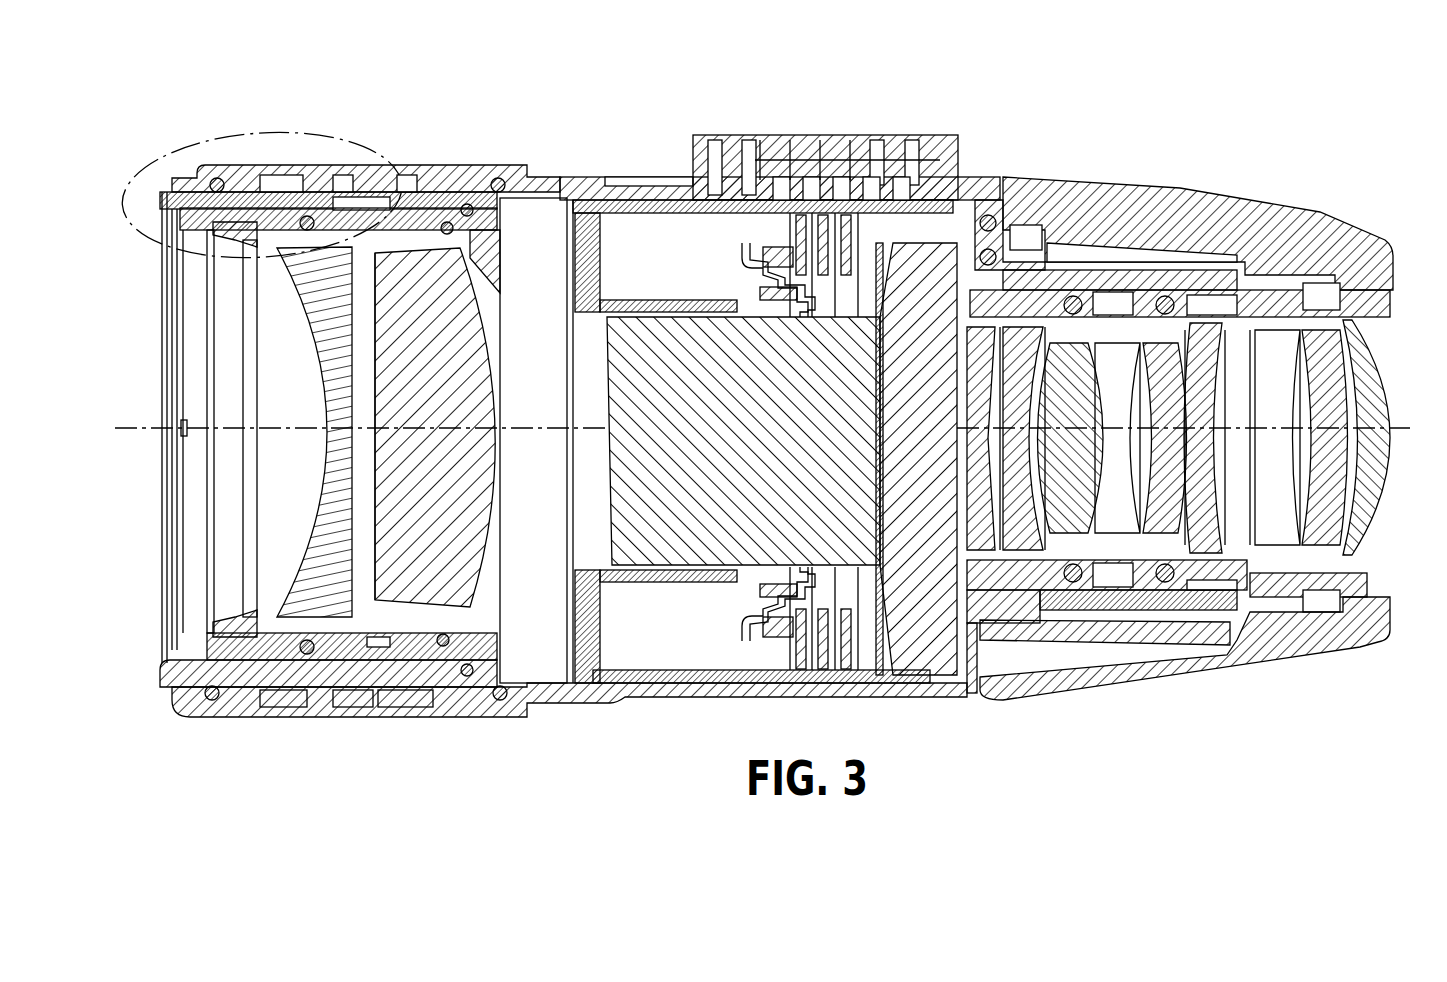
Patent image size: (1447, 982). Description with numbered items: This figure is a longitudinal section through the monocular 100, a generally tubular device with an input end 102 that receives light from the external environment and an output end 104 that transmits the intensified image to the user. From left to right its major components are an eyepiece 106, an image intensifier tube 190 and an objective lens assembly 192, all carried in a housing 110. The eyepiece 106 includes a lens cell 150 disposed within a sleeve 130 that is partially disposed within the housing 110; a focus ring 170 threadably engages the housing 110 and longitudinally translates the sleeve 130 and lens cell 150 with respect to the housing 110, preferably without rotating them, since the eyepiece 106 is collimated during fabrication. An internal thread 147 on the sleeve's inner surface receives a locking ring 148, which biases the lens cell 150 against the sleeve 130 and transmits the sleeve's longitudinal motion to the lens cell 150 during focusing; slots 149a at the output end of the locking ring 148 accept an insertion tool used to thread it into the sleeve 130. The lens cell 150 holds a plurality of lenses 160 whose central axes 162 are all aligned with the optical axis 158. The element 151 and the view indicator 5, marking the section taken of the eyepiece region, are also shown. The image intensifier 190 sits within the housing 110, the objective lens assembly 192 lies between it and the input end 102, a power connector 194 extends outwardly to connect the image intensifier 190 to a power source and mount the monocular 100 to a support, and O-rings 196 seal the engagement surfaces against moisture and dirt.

The monocular 100 is at (503, 63).
The input end 102 is at (1393, 518).
The output end 104 is at (160, 553).
The eyepiece 106 is at (565, 112).
The housing 110 is at (541, 172).
The sleeve 130 is at (223, 718).
The internal thread 147 is at (160, 332).
The locking ring 148 is at (165, 650).
The slots 149a is at (167, 468).
The lens cell 150 is at (357, 717).
The lens holder 151 is at (457, 213).
The optical axis 158 is at (180, 430).
The lenses 160 is at (237, 723).
The central axes 162 is at (132, 428).
The focus ring 170 is at (512, 722).
The image intensifier tube 190 is at (975, 94).
The objective lens assembly 192 is at (1385, 110).
The power connector 194 is at (745, 136).
The O-rings 196 is at (200, 720).
The section view indicator 5 is at (167, 143).